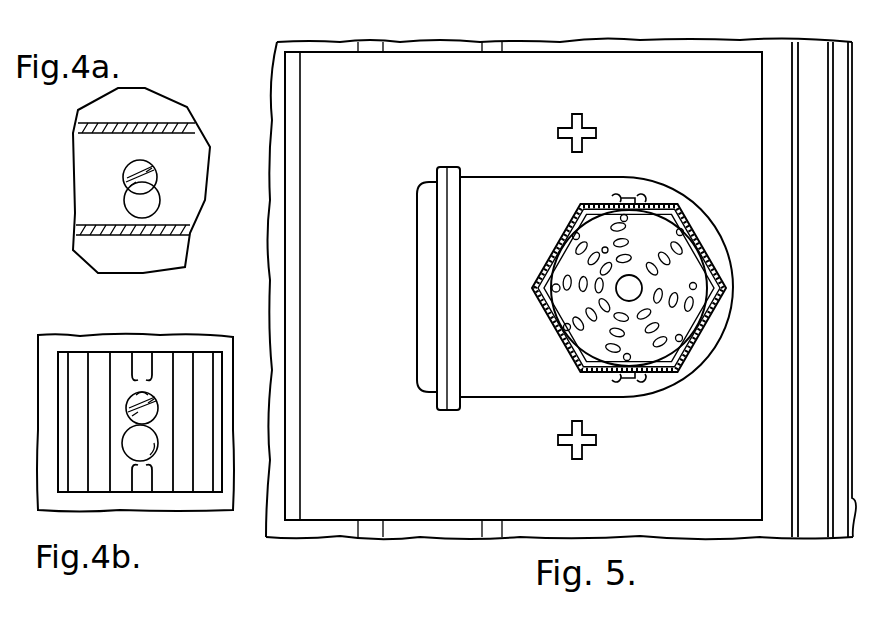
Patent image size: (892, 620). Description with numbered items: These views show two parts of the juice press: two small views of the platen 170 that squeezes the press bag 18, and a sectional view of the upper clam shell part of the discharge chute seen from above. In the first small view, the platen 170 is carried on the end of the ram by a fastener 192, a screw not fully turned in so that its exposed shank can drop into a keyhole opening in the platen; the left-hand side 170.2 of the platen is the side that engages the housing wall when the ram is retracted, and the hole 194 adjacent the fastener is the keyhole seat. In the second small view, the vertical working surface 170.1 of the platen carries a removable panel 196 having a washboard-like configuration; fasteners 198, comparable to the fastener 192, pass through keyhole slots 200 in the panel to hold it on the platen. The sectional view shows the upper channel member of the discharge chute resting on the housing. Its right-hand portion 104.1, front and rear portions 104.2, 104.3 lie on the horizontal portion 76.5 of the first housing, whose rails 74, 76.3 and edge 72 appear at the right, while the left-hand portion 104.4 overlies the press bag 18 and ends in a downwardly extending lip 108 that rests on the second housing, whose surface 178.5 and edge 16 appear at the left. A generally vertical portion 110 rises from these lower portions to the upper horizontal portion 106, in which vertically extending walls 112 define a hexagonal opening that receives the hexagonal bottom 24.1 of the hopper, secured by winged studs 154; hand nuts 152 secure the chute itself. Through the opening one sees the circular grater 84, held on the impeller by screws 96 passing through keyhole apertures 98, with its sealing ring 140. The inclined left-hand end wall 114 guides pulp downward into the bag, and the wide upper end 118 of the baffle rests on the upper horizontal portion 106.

In FIG. 5, the ventilation assembly 16 is at (645, 33).
In FIG. 5, the press bag 18 is at (384, 8).
In FIG. 5, the lower hexagonal opening of the hopper 24.1 is at (700, 232).
In FIG. 5, the edge flange 72 is at (855, 537).
In FIG. 5, the side rail 74 is at (843, 40).
In FIG. 5, the rail web 76.3 is at (806, 78).
In FIG. 5, the horizontal portion of the first housing portion 76.5 is at (706, 40).
In FIG. 5, the grater 84 is at (572, 252).
In FIG. 5, the screws 96 is at (565, 330).
In FIG. 5, the keyhole apertures 98 is at (576, 362).
In FIG. 5, the right-hand portion of the lower horizontal portion 104.1 is at (736, 381).
In FIG. 5, the front portion of the lower horizontal portion 104.2 is at (656, 496).
In FIG. 5, the rear portion of the lower horizontal portion 104.3 is at (466, 99).
In FIG. 5, the left-hand portion of the lower horizontal portion 104.4 is at (372, 297).
In FIG. 5, the upper horizontal portion 106 is at (503, 183).
In FIG. 5, the downwardly extending lip 108 is at (296, 194).
In FIG. 5, the vertical portion 110 is at (690, 385).
In FIG. 5, the vertically extending walls 112 is at (512, 304).
In FIG. 5, the left-hand end wall 114 is at (430, 331).
In FIG. 5, the upper end of the baffle 118 is at (452, 210).
In FIG. 5, the hatched gasket band 140 is at (629, 275).
In FIG. 5, the threaded elements 152 is at (578, 114).
In FIG. 5, the winged studs 154 is at (630, 196).
In FIG. 4A, the platen 170 is at (98, 258).
In FIG. 4B, the vertical working surface of the platen 170.1 is at (150, 340).
In FIG. 4A, the left-hand side of the platen 170.2 is at (167, 108).
In FIG. 5, the panel outer edge 178.5 is at (326, 42).
In FIG. 4A, the fastener 192 is at (135, 165).
In FIG. 4A, the screw hole 194 is at (125, 203).
In FIG. 4B, the removable panel 196 is at (182, 360).
In FIG. 4B, the fasteners 198 is at (158, 403).
In FIG. 4B, the keyhole slots 200 is at (162, 493).